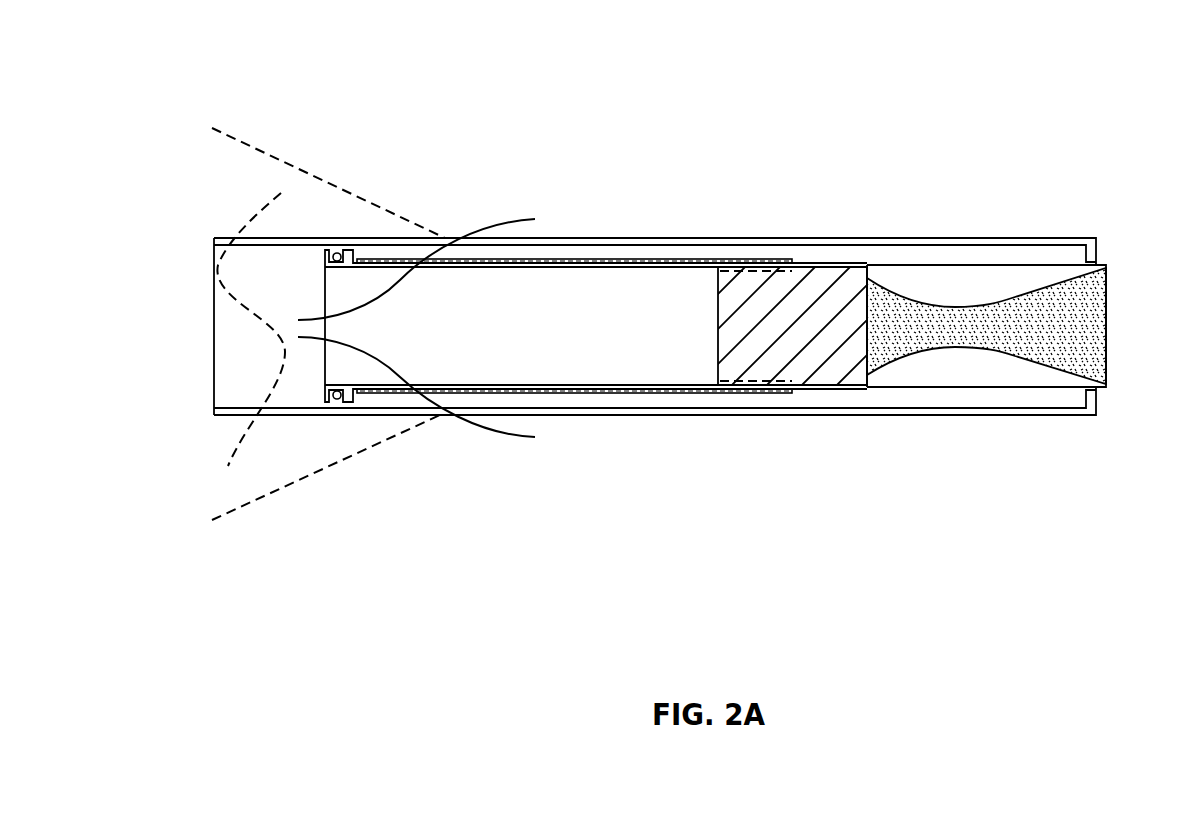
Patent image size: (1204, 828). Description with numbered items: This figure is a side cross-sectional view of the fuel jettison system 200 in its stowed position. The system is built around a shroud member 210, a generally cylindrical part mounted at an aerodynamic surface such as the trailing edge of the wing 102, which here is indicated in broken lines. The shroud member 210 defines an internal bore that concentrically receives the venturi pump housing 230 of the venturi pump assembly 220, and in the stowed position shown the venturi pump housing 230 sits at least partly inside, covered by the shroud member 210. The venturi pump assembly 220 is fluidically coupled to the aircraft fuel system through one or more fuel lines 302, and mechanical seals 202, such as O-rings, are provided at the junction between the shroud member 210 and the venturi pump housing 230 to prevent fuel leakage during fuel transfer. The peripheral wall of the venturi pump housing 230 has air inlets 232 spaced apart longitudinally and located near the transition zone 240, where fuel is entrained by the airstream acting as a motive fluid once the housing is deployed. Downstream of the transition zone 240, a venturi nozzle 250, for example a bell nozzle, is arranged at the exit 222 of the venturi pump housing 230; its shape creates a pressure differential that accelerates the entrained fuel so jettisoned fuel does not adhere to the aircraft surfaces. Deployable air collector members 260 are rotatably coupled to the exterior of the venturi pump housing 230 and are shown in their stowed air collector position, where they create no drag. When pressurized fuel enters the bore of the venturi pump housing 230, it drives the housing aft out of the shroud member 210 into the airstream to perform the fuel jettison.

The fuel jettison system 200 is at (405, 95).
The wing 102 is at (318, 176).
The mechanical seal 202 is at (334, 250).
The fuel line 302 is at (431, 327).
The shroud member 210 is at (580, 238).
The deployable air collector member 260 is at (636, 259).
The air inlet 232 is at (765, 270).
The venturi pump assembly 220 is at (967, 264).
The exit 222 is at (1113, 315).
The venturi pump housing 230 is at (655, 383).
The transition zone 240 is at (812, 352).
The venturi nozzle 250 is at (1082, 342).